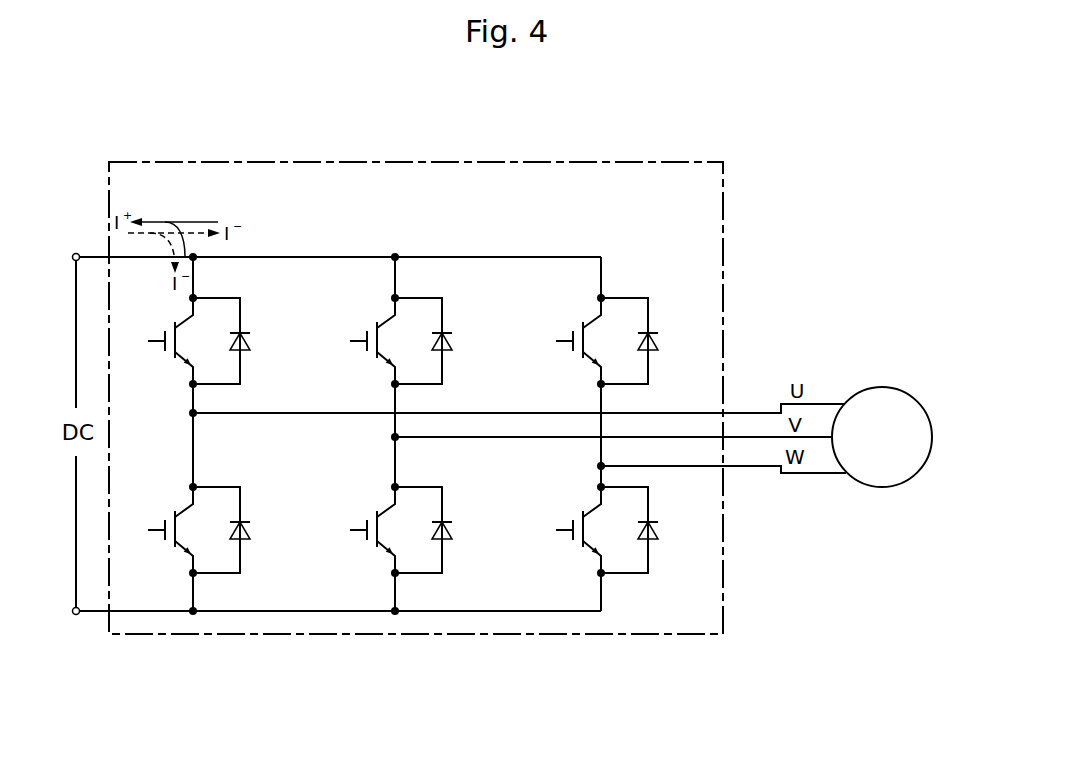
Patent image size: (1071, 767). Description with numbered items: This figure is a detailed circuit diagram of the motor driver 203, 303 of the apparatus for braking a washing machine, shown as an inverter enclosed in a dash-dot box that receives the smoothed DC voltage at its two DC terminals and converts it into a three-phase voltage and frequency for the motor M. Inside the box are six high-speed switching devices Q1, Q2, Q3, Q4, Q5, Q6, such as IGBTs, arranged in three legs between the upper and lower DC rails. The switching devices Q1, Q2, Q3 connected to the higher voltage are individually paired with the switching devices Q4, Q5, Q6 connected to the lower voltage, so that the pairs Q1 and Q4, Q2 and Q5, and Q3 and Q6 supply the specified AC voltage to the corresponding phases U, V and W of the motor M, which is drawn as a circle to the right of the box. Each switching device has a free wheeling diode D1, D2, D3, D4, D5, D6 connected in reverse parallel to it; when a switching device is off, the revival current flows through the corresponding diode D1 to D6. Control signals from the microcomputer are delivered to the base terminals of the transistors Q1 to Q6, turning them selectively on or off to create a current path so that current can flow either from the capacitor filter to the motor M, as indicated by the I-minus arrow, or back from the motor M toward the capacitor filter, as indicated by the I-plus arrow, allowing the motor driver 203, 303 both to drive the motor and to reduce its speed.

The motor driver 203 is at (416, 350).
The motor driver 303 is at (323, 162).
The switching device Q1 is at (185, 341).
The switching device Q2 is at (387, 341).
The switching device Q3 is at (593, 341).
The switching device Q4 is at (185, 530).
The switching device Q5 is at (387, 530).
The switching device Q6 is at (593, 530).
The free wheeling diode D1 is at (245, 341).
The free wheeling diode D2 is at (447, 341).
The free wheeling diode D3 is at (653, 341).
The free wheeling diode D4 is at (245, 530).
The free wheeling diode D5 is at (447, 530).
The free wheeling diode D6 is at (653, 530).
The motor M is at (899, 390).